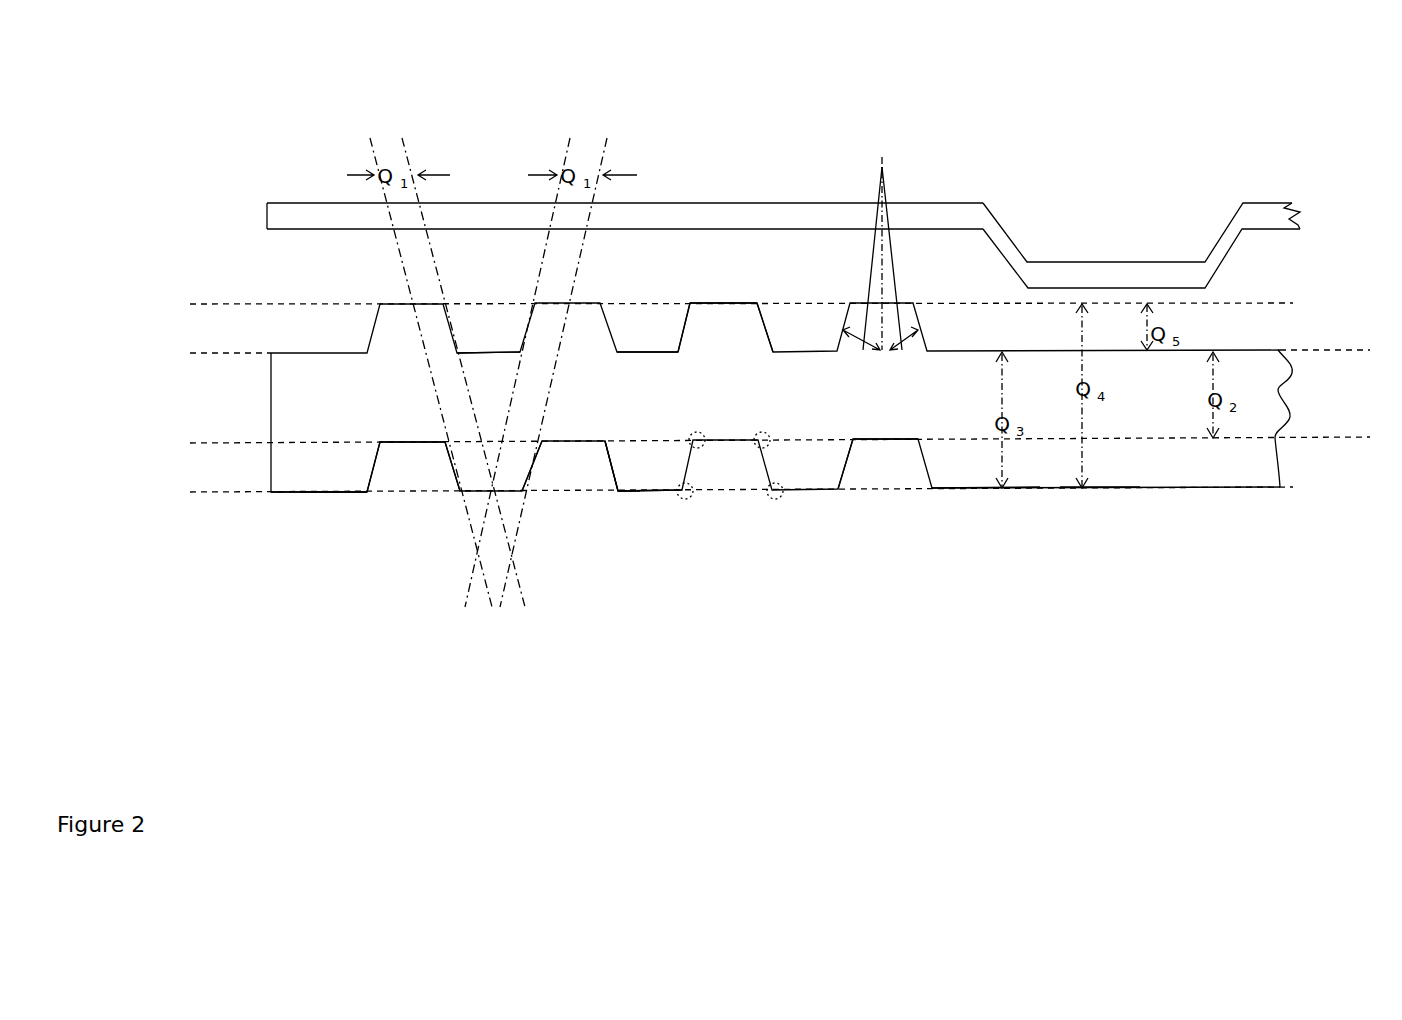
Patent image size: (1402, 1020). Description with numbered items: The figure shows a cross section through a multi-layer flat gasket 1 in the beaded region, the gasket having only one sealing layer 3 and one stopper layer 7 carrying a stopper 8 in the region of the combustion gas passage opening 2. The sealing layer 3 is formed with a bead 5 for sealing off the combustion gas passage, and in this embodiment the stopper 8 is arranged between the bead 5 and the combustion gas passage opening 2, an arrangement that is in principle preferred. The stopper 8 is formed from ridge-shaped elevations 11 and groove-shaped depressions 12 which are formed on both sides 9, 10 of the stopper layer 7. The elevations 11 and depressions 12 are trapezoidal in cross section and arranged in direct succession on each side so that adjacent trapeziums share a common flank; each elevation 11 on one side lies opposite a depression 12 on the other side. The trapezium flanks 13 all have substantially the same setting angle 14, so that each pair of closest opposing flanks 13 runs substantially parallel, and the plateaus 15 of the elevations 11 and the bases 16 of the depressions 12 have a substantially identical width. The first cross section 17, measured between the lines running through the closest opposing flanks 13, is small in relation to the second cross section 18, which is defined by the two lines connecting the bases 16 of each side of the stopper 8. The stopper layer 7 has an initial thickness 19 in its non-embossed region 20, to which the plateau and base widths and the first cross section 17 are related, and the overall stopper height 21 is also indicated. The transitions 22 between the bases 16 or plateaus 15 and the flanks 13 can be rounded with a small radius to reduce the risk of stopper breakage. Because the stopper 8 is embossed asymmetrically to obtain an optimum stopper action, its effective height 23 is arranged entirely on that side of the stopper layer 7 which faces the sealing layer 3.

The multi-layer flat gasket 1 is at (148, 202).
The combustion gas passage opening 2 is at (748, 422).
The sealing layer 3 is at (320, 217).
The bead 5 is at (1060, 267).
The stopper layer 7 is at (415, 417).
The stopper 8 is at (637, 390).
The side of the stopper layer 9 is at (323, 492).
The side of the stopper layer 10 is at (323, 353).
The ridge-shaped elevation 11 is at (698, 313).
The groove-shaped depression 12 is at (658, 340).
The trapezium flank 13 is at (847, 470).
The setting angle 14 is at (880, 239).
The plateau 15 is at (733, 293).
The base 16 is at (491, 352).
The cross section Q1 17 is at (410, 178).
The cross section Q2 18 is at (1280, 398).
The thickness Q3 of the stopper layer 19 is at (985, 490).
The non-embossed region of the stopper layer 20 is at (338, 478).
The stopper height Q4 21 is at (1097, 410).
The transition 22 is at (697, 447).
The effective height Q5 of the stopper 23 is at (1173, 325).